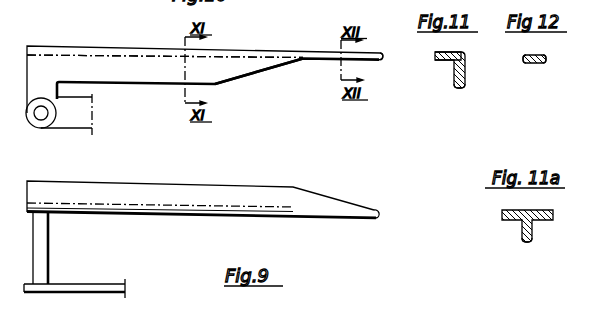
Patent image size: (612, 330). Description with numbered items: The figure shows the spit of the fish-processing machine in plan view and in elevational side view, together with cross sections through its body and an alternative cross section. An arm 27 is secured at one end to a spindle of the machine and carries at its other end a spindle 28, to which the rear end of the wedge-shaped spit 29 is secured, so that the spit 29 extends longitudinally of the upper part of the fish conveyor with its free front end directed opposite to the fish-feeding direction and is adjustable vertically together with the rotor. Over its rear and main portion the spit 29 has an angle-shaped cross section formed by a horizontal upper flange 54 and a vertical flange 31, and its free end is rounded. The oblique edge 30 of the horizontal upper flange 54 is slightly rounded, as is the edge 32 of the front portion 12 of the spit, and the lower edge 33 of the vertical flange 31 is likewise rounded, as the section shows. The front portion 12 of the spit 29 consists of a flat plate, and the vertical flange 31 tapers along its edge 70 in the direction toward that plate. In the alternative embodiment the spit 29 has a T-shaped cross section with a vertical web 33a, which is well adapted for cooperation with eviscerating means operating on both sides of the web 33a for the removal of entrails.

In FIG. 10, the front portion 12 is at (381, 62).
In FIG. 10, the arm 27 is at (75, 120).
In FIG. 9, the arm 27 is at (82, 289).
In FIG. 10, the spindle 28 is at (42, 116).
In FIG. 9, the spindle 28 is at (40, 246).
In FIG. 10, the spit 29 is at (256, 51).
In FIG. 11A, the spit 29 is at (527, 214).
In FIG. 9, the oblique edge 30 is at (340, 198).
In FIG. 12, the oblique edge 30 is at (523, 59).
In FIG. 10, the vertical flange 31 is at (145, 76).
In FIG. 9, the vertical flange 31 is at (168, 209).
In FIG. 11, the vertical flange 31 is at (465, 75).
In FIG. 9, the edge 32 is at (347, 220).
In FIG. 12, the edge 32 is at (547, 59).
In FIG. 11, the lower edge 33 is at (455, 88).
In FIG. 11A, the vertical web 33a is at (522, 240).
In FIG. 10, the horizontal upper flange 54 is at (105, 54).
In FIG. 9, the horizontal upper flange 54 is at (213, 197).
In FIG. 11, the horizontal upper flange 54 is at (450, 61).
In FIG. 12, the horizontal upper flange 54 is at (535, 64).
In FIG. 10, the edge 70 is at (264, 69).